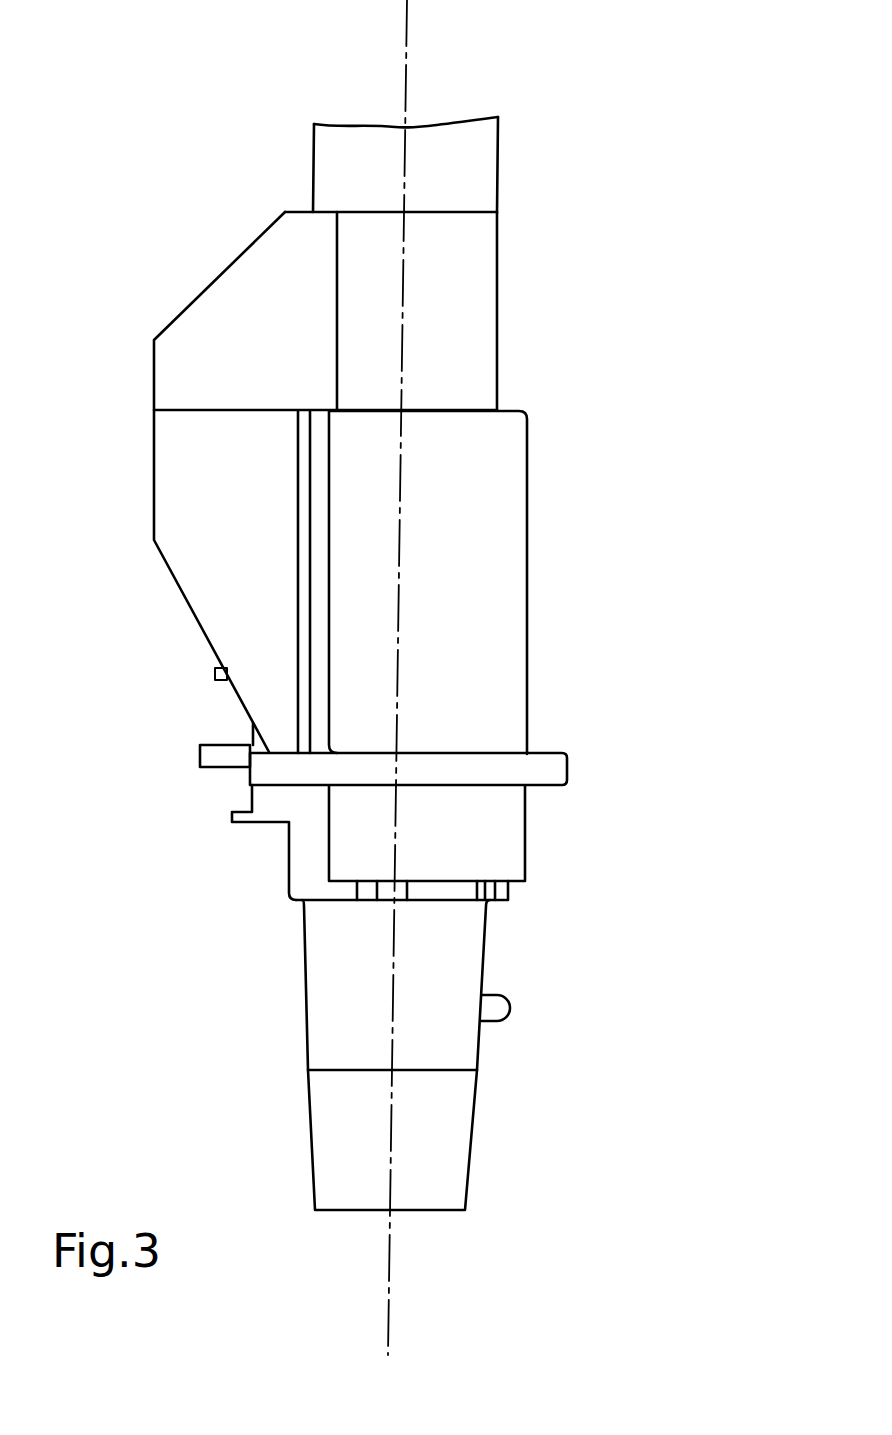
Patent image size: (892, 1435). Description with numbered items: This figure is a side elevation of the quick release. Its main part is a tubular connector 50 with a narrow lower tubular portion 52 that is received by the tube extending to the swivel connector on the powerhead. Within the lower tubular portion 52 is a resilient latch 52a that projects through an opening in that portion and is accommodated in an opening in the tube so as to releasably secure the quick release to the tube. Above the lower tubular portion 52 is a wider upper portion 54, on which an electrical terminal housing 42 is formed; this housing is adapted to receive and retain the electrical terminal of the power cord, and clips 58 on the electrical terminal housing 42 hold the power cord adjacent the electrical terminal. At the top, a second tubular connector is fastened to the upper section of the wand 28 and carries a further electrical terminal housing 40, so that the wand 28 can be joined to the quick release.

The wand 28 is at (498, 187).
The electrical terminal housing 40 is at (230, 275).
The electrical terminal housing 42 is at (147, 510).
The tubular connector 50 is at (538, 513).
The lower tubular portion 52 is at (495, 1157).
The resilient latch 52a is at (506, 1007).
The upper portion 54 is at (527, 700).
The clips 58 is at (214, 680).